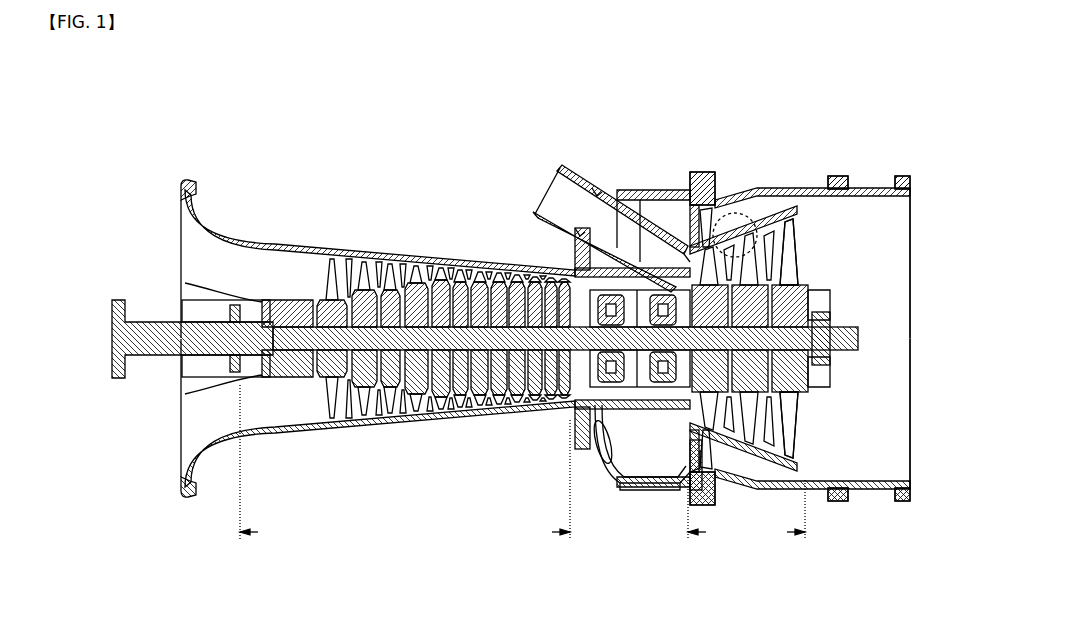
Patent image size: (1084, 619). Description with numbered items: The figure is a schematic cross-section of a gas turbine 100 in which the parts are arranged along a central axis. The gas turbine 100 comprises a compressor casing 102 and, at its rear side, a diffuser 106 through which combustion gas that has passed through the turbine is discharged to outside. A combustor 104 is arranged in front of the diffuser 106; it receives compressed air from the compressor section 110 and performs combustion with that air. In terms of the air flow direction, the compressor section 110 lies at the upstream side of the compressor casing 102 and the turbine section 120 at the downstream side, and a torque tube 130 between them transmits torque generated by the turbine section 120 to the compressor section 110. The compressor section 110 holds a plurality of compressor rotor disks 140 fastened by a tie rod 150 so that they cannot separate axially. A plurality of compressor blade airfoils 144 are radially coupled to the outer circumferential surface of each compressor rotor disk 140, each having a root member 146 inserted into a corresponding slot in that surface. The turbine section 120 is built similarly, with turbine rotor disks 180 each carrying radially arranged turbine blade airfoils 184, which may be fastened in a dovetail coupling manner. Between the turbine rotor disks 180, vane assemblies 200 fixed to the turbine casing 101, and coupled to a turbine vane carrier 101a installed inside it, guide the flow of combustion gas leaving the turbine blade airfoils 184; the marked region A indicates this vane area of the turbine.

The gas turbine 100 is at (795, 61).
The turbine casing 101 is at (768, 196).
The turbine vane carrier 101a is at (700, 232).
The compressor casing 102 is at (441, 244).
The combustor 104 is at (572, 160).
The diffuser 106 is at (872, 170).
The compressor section 110 is at (405, 462).
The turbine section 120 is at (746, 510).
The torque tube 130 is at (577, 258).
The compressor rotor disk 140 is at (333, 305).
The compressor blade airfoil 144 is at (342, 295).
The root member 146 is at (339, 288).
The tie rod 150 is at (403, 333).
The turbine rotor disk 180 is at (800, 262).
The turbine blade airfoil 184 is at (786, 262).
The vane assembly 200 is at (698, 250).
The region A is at (736, 216).